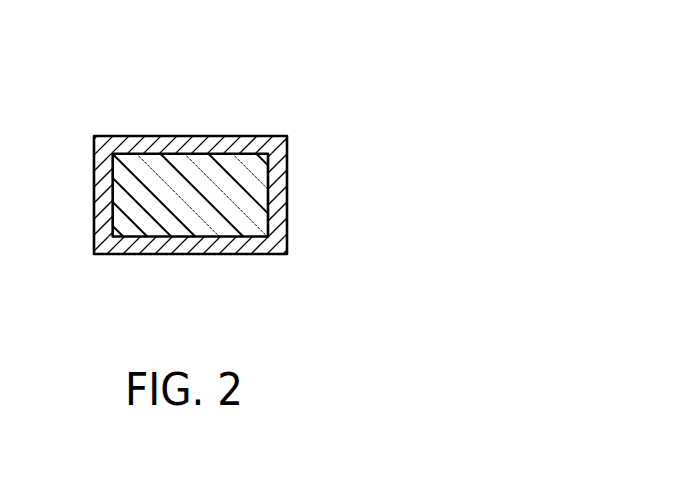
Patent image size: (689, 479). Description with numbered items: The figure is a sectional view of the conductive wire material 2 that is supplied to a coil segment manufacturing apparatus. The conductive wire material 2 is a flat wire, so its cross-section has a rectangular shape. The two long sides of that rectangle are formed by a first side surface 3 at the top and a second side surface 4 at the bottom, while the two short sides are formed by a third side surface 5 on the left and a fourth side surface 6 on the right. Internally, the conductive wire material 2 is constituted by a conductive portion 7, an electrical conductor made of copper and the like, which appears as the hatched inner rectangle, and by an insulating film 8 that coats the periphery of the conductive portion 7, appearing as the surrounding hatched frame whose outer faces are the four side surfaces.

The conductive wire material 2 is at (208, 172).
The first side surface 3 is at (165, 136).
The second side surface 4 is at (155, 254).
The third side surface 5 is at (95, 194).
The fourth side surface 6 is at (287, 197).
The conductive portion 7 is at (223, 230).
The insulating film 8 is at (272, 250).